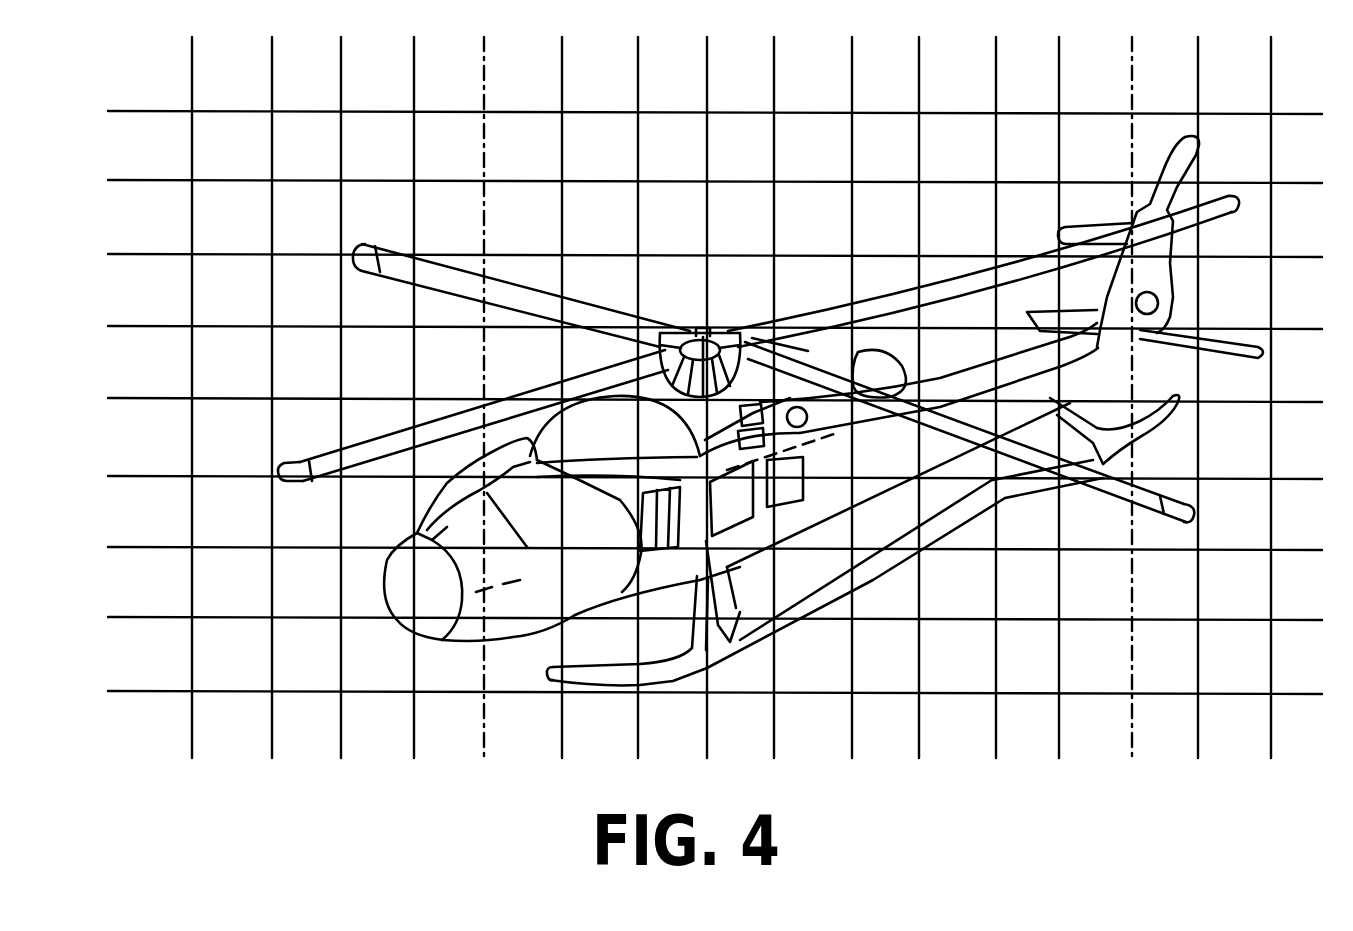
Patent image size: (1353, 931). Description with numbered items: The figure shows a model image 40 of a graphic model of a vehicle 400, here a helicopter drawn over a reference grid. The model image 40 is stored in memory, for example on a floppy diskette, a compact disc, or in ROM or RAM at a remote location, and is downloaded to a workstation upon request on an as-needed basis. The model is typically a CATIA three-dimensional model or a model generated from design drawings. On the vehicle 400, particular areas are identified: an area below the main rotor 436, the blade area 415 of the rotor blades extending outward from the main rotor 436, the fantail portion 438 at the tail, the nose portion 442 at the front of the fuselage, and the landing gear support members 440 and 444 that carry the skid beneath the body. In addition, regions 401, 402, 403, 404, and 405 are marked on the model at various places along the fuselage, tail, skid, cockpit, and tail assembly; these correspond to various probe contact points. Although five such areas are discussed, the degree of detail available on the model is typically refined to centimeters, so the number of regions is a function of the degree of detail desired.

The model image 40 is at (1112, 103).
The vehicle 400 is at (628, 288).
The blade area 415 is at (373, 247).
The main rotor 436 is at (747, 320).
The region 401 is at (787, 407).
The fantail portion 438 is at (1158, 268).
The region 402 is at (1160, 304).
The region 405 is at (1165, 430).
The landing gear support member 444 is at (1127, 450).
The nose portion 442 is at (400, 597).
The region 404 is at (440, 617).
The landing gear support member 440 is at (730, 633).
The region 403 is at (710, 653).